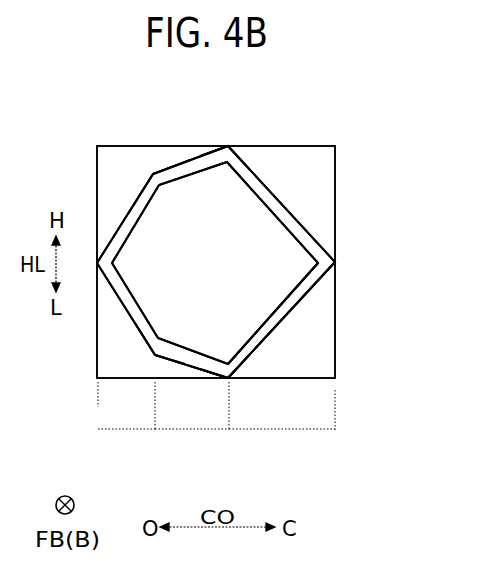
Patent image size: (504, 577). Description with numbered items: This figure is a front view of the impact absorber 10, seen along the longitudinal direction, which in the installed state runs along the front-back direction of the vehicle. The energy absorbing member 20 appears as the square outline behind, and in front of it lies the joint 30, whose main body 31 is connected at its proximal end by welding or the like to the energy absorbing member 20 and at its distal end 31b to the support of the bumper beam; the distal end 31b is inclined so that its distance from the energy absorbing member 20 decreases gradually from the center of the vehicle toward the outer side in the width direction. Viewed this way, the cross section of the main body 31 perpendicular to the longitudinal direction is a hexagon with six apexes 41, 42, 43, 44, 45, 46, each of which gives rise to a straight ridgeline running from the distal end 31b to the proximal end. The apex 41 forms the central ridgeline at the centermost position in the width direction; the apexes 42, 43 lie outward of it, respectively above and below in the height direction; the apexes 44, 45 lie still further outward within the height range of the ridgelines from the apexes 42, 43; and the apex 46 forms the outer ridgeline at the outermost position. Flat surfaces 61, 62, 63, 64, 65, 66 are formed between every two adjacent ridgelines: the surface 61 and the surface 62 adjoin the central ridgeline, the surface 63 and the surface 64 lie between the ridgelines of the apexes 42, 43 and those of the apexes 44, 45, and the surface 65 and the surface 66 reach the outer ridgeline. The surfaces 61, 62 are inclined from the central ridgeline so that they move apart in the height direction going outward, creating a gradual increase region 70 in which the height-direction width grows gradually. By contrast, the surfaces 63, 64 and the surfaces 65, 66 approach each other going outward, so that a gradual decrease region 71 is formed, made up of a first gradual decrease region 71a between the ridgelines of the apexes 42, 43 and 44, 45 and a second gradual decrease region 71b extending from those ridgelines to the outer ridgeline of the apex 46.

The impact absorber 10 is at (63, 92).
The energy absorbing member 20 is at (332, 376).
The joint 30 is at (156, 172).
The main body 31 is at (172, 243).
The distal end 31b is at (262, 172).
The apex 41 is at (316, 280).
The apex 42 is at (230, 147).
The apex 43 is at (233, 380).
The apex 44 is at (152, 174).
The apex 45 is at (153, 356).
The apex 46 is at (108, 250).
The surface 61 is at (288, 212).
The surface 62 is at (289, 312).
The surface 63 is at (200, 165).
The surface 64 is at (185, 356).
The surface 65 is at (133, 208).
The surface 66 is at (128, 313).
The gradual increase region 70 is at (282, 420).
The gradual decrease region 71 is at (163, 435).
The first gradual decrease region 71a is at (192, 458).
The second gradual decrease region 71b is at (128, 435).